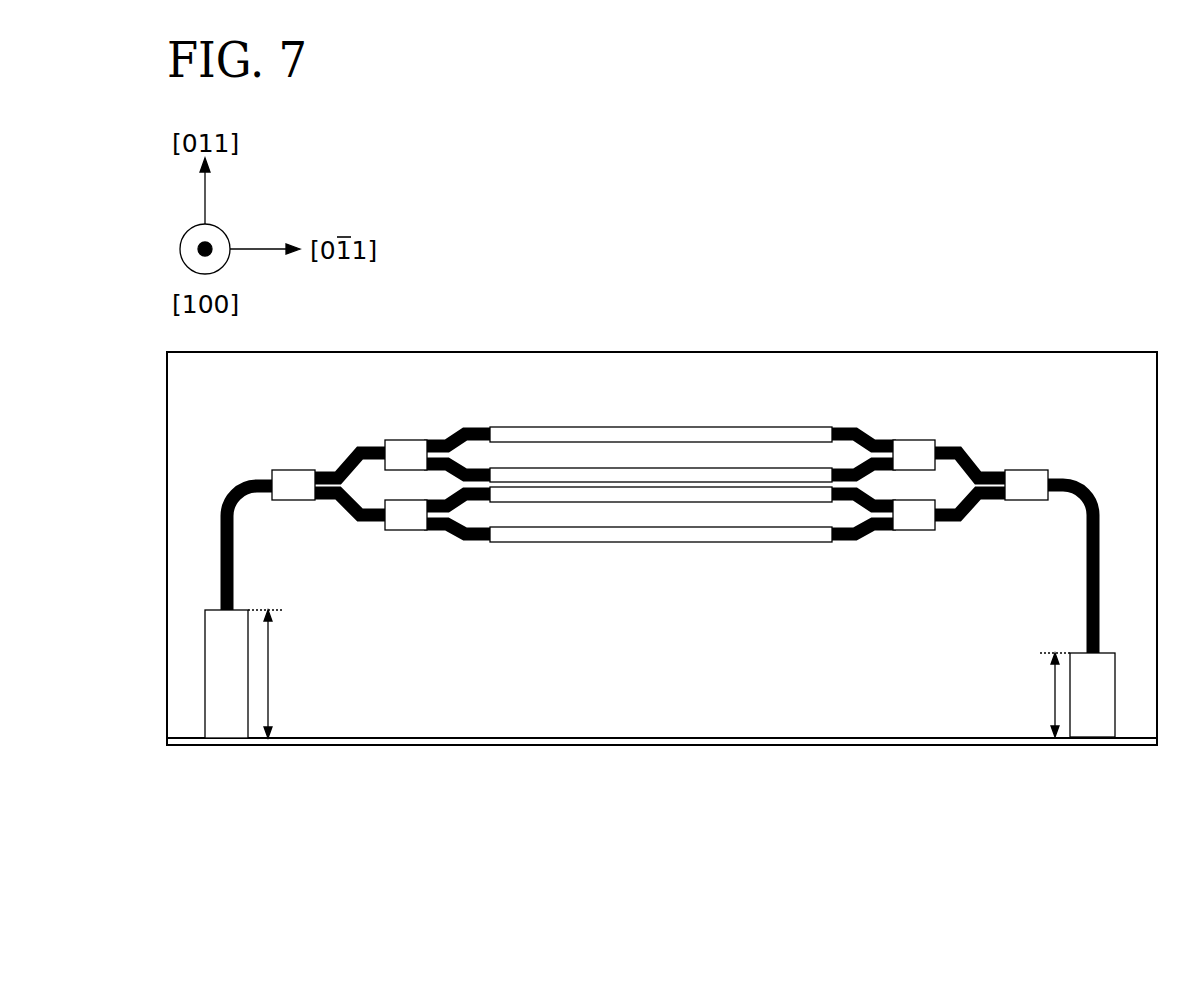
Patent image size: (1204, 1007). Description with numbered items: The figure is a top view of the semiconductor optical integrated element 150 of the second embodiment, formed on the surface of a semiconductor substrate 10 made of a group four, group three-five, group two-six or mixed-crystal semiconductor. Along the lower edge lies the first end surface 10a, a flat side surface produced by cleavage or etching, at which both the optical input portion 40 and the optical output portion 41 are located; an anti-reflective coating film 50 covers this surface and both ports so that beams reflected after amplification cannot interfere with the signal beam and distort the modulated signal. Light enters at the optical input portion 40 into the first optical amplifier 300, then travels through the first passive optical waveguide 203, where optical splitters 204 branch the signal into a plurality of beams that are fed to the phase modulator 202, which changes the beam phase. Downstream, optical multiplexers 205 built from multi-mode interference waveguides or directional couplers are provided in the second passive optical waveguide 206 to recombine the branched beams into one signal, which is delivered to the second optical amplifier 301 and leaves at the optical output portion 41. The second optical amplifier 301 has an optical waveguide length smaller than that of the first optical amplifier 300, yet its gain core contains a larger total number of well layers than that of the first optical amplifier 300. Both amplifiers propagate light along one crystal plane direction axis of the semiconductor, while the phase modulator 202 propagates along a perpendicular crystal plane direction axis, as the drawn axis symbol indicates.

The semiconductor substrate 10 is at (770, 703).
The first end surface 10a is at (665, 741).
The optical input portion 40 is at (223, 746).
The optical output portion 41 is at (1093, 746).
The anti-reflective coating film 50 is at (543, 745).
The semiconductor optical integrated element 150 is at (720, 219).
The phase modulator 202 is at (600, 537).
The first passive optical waveguide 203 is at (462, 540).
The optical splitters 204 is at (407, 515).
The optical multiplexers 205 is at (910, 515).
The second passive optical waveguide 206 is at (1087, 553).
The first optical amplifier 300 is at (225, 702).
The second optical amplifier 301 is at (1097, 728).